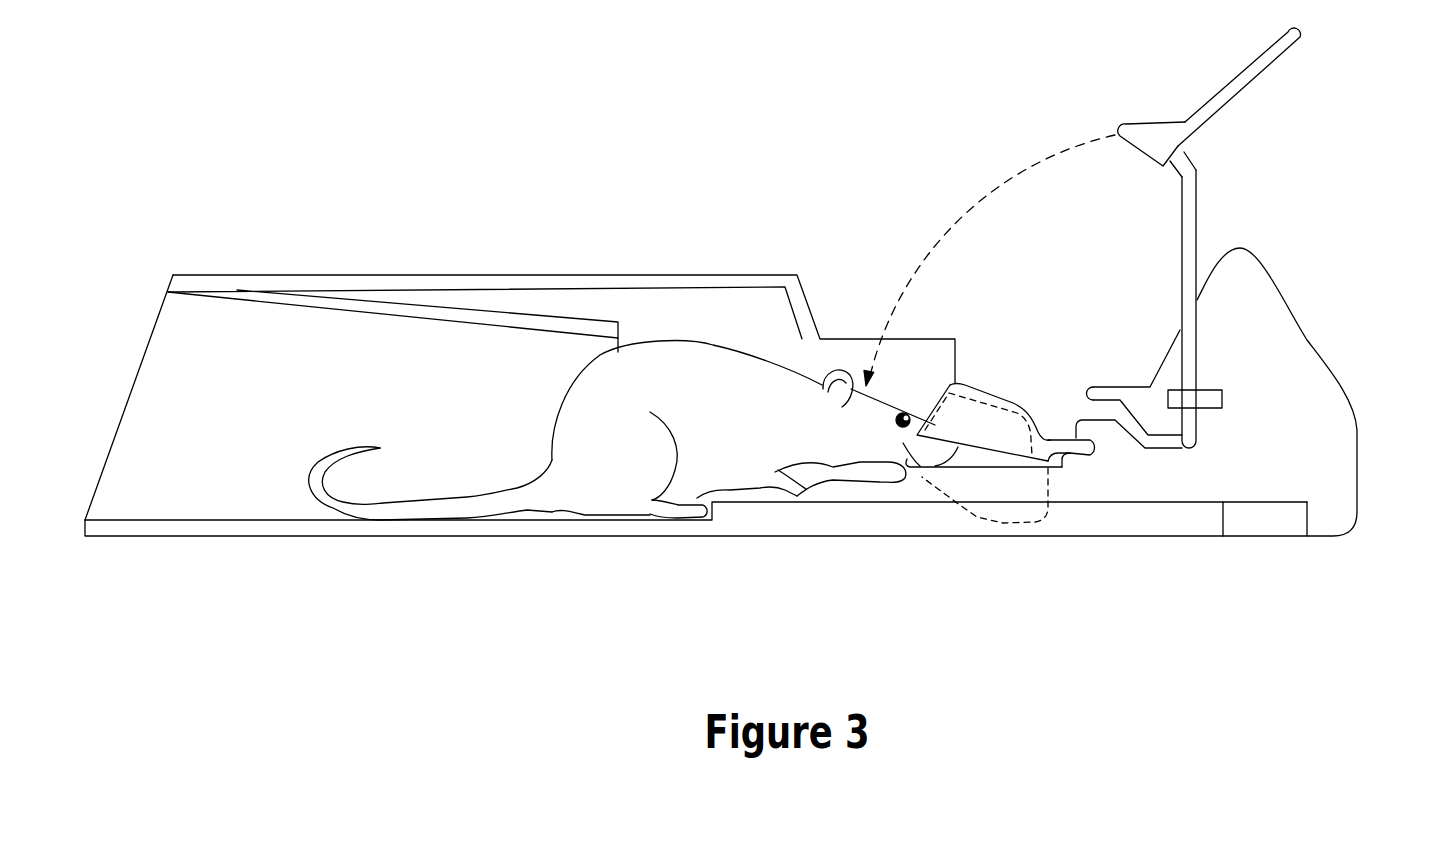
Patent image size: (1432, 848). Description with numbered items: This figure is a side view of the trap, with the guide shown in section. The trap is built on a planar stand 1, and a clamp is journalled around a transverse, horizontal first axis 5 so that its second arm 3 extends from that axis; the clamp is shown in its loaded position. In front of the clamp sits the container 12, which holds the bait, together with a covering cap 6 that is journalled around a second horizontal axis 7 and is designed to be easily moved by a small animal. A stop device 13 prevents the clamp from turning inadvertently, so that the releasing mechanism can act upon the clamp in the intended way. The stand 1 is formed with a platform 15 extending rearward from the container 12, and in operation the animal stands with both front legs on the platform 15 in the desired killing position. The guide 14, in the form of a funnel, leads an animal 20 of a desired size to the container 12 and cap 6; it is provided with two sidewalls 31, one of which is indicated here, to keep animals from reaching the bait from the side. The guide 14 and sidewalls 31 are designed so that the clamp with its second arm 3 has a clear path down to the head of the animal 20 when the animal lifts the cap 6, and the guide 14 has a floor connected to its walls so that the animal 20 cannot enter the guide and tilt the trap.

The planar stand 1 is at (897, 522).
The second arm 3 is at (1197, 210).
The first axis 5 is at (1196, 450).
The covering cap 6 is at (990, 428).
The second horizontal axis 7 is at (1093, 457).
The container 12 is at (1021, 524).
The stop device 13 is at (1222, 397).
The guide 14 is at (570, 283).
The platform 15 is at (835, 500).
The animal 20 is at (690, 458).
The sidewalls 31 is at (848, 362).